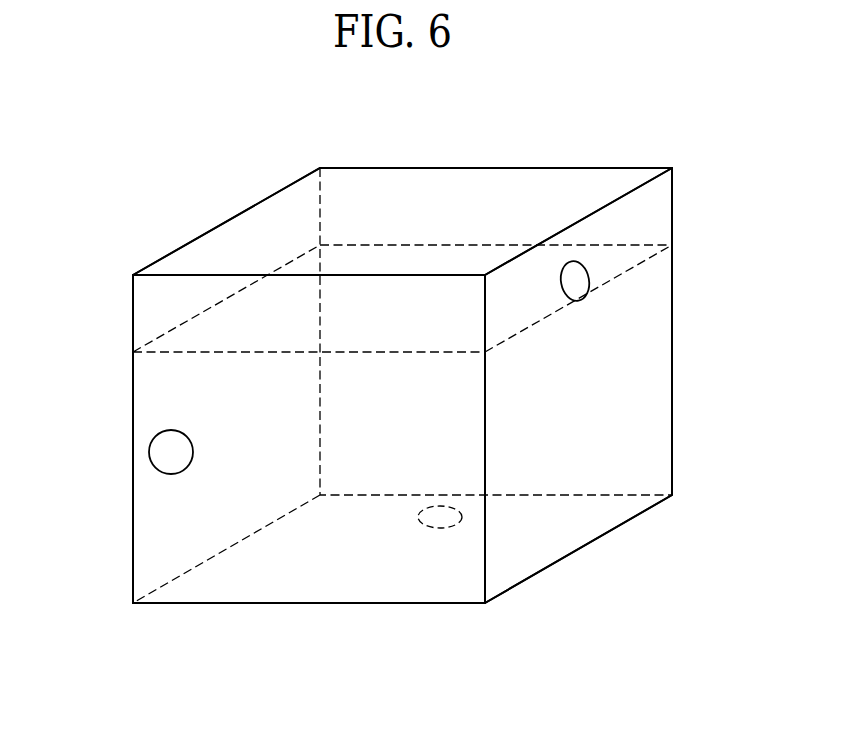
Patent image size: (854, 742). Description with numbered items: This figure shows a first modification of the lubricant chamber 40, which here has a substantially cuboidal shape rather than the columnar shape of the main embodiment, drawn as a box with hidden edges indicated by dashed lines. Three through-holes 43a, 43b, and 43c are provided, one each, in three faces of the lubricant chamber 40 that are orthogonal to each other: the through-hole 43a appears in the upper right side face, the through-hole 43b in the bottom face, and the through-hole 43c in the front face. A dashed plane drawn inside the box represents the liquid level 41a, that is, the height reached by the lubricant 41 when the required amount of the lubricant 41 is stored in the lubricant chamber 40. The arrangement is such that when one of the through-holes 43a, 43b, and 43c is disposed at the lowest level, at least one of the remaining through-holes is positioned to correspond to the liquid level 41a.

The lubricant chamber 40 is at (218, 228).
The lubricant 41 is at (636, 416).
The liquid level 41a is at (450, 245).
The through-hole 43a is at (585, 265).
The through-hole 43b is at (432, 528).
The through-hole 43c is at (150, 452).